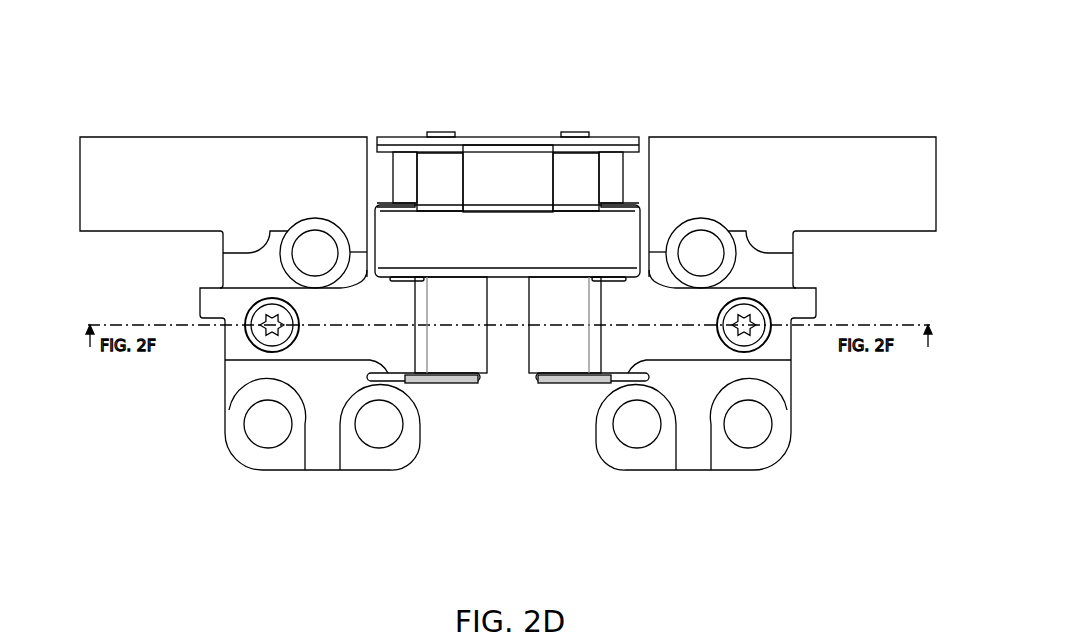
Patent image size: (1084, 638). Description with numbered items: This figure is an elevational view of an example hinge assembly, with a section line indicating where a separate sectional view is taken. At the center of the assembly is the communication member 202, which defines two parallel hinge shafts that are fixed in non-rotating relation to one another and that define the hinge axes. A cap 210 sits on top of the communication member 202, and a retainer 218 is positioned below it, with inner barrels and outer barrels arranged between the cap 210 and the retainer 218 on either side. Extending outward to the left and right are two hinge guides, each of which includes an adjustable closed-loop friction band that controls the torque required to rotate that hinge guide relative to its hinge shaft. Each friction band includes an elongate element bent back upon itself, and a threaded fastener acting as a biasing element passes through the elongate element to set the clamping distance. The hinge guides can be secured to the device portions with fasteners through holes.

The communication member 202 is at (525, 131).
The cap 210 is at (484, 136).
The retainer 218 is at (508, 268).